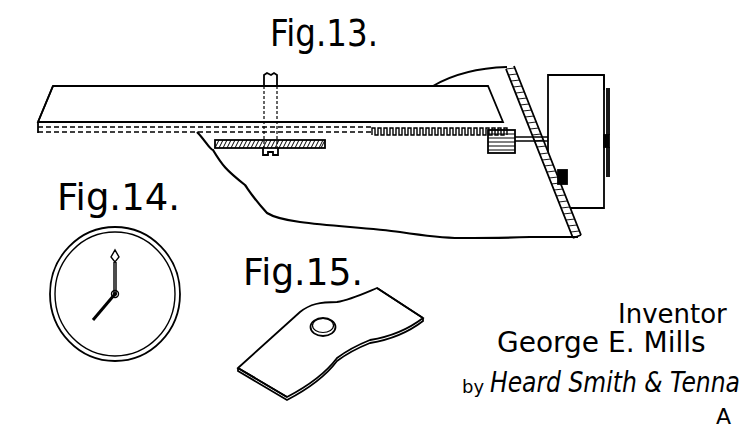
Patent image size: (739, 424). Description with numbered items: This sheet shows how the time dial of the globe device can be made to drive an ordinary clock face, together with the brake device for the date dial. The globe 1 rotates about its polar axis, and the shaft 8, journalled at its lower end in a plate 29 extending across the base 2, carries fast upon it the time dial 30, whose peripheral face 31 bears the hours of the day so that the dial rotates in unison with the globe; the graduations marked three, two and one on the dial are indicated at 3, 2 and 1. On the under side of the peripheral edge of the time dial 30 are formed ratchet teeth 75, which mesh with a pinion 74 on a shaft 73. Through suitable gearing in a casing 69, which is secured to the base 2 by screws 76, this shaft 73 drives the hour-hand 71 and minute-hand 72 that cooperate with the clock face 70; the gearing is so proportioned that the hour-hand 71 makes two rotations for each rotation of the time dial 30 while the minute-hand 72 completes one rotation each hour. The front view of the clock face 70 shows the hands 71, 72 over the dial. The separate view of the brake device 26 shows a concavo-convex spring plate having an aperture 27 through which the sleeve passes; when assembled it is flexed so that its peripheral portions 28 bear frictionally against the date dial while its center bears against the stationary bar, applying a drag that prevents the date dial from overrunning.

In FIG. 13, the globe 1 is at (334, 101).
In FIG. 13, the base 2 is at (584, 231).
In FIG. 13, the scale graduation 3 is at (206, 101).
In FIG. 13, the shaft 8 is at (263, 80).
In FIG. 15, the brake device 26 is at (317, 357).
In FIG. 15, the aperture 27 is at (320, 327).
In FIG. 15, the peripheral portion 28 is at (405, 310).
In FIG. 13, the plate 29 is at (300, 150).
In FIG. 13, the time dial 30 is at (137, 86).
In FIG. 13, the peripheral face 31 is at (59, 98).
In FIG. 13, the casing 69 is at (578, 86).
In FIG. 14, the casing 69 is at (69, 246).
In FIG. 13, the clock face 70 is at (606, 83).
In FIG. 14, the clock face 70 is at (152, 303).
In FIG. 13, the hour-hand 71 is at (608, 160).
In FIG. 14, the hour-hand 71 is at (100, 313).
In FIG. 13, the minute-hand 72 is at (610, 108).
In FIG. 14, the minute-hand 72 is at (118, 272).
In FIG. 13, the shaft 73 is at (530, 143).
In FIG. 13, the pinion 74 is at (488, 141).
In FIG. 13, the ratchet teeth 75 is at (437, 135).
In FIG. 13, the screws 76 is at (568, 184).